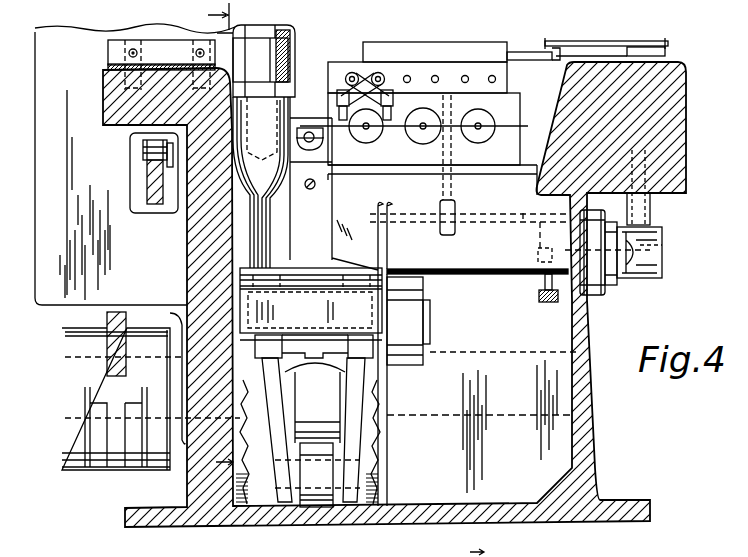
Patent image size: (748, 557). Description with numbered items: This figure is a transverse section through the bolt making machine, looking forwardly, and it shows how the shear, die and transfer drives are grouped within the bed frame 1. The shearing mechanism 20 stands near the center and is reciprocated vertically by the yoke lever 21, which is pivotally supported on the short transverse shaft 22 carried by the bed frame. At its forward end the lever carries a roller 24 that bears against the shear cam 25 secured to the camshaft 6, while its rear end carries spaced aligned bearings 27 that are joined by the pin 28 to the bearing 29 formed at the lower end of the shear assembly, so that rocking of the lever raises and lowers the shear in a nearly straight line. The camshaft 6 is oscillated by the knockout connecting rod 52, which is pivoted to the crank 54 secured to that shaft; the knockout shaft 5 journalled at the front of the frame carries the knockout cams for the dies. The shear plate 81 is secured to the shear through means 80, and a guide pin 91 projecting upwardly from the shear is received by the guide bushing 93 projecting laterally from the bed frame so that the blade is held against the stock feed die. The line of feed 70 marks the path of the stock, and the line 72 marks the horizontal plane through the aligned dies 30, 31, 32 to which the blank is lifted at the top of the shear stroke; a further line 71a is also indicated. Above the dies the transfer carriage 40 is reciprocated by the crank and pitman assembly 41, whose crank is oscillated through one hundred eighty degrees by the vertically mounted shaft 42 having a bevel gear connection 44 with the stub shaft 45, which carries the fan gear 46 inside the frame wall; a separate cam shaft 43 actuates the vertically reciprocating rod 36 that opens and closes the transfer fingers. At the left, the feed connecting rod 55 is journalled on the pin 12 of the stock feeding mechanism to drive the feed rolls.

The bed frame 1 is at (213, 497).
The knockout shaft 5 is at (214, 237).
The camshaft 6 is at (518, 383).
The pin 12 is at (143, 150).
The shearing mechanism 20 is at (302, 268).
The yoke lever 21 is at (475, 354).
The short transverse shaft 22 is at (431, 314).
The roller 24 is at (320, 470).
The shear cam 25 is at (315, 403).
The spaced aligned bearings 27 is at (262, 362).
The pin 28 is at (392, 268).
The bearing 29 is at (312, 330).
The die 30 is at (374, 134).
The die 31 is at (432, 140).
The die 32 is at (478, 135).
The vertically reciprocating rod 36 is at (457, 190).
The carriage 40 is at (412, 72).
The crank and pitman assembly 41 is at (648, 30).
The vertically mounted shaft 42 is at (644, 217).
The cam shaft 43 is at (542, 224).
The bevel gear connection 44 is at (650, 238).
The stub shaft 45 is at (596, 262).
The fan gear 46 is at (545, 283).
The knockout connecting rod 52 is at (107, 317).
The crank 54 is at (78, 375).
The feed connecting rod 55 is at (148, 176).
The line of feed 70 is at (313, 140).
The section line 71a is at (503, 551).
The horizontal plane 72 is at (446, 120).
The securing means 80 is at (306, 191).
The shear plate 81 is at (289, 183).
The guide pin 91 is at (278, 27).
The guide bushing 93 is at (287, 47).